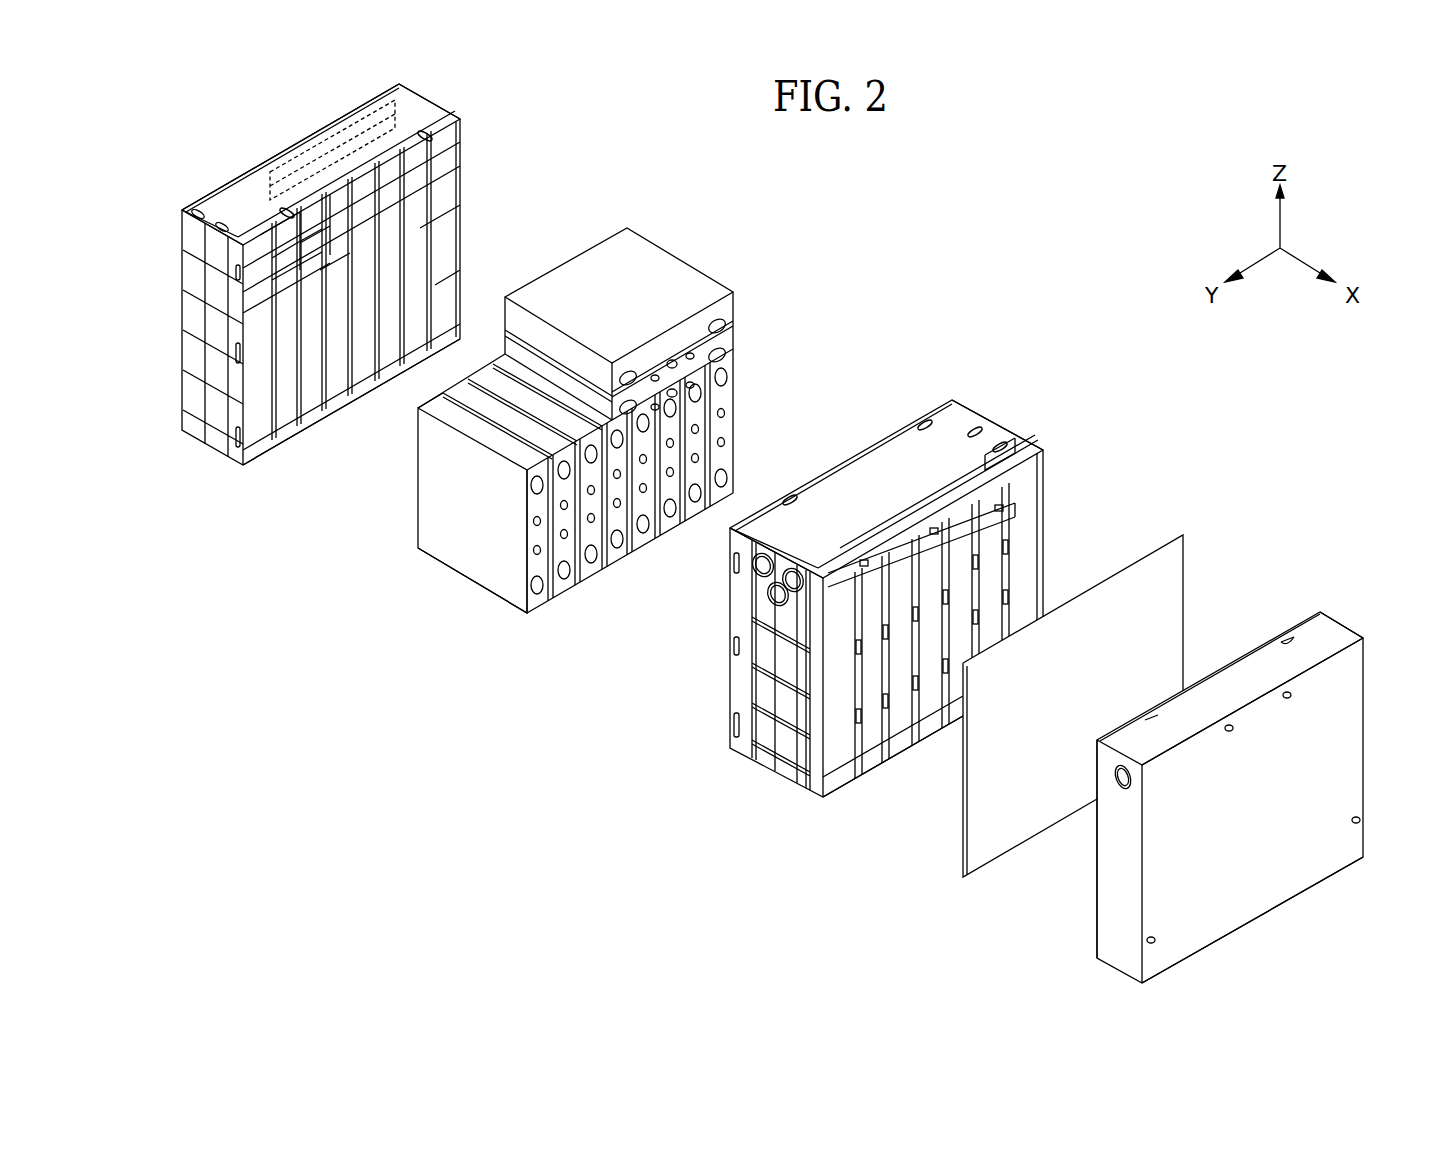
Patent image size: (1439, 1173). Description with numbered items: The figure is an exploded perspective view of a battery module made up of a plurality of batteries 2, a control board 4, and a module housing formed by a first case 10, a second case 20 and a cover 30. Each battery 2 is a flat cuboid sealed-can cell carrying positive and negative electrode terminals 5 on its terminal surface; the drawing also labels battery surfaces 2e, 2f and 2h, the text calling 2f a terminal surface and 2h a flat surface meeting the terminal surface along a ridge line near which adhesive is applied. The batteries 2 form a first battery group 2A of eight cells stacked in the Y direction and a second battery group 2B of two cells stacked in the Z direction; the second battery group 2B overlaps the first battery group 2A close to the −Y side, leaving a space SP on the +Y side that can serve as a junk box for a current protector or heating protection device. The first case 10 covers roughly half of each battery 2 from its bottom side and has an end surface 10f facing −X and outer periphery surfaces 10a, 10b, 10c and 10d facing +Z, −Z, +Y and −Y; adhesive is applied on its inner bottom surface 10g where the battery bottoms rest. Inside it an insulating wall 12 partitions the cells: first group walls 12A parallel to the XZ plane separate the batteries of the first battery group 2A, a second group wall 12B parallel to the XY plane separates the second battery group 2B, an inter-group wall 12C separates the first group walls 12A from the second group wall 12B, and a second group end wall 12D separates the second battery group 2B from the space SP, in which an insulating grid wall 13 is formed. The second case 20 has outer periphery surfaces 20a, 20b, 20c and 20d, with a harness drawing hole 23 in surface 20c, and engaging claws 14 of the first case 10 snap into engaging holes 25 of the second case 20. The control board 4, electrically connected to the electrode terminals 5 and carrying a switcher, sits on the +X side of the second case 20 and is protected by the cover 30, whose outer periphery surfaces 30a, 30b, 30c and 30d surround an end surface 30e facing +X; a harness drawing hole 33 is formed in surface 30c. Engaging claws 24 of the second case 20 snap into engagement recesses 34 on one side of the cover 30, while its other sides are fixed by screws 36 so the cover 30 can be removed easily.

The battery 2 is at (649, 312).
The first battery group 2A is at (542, 505).
The second battery group 2B is at (745, 306).
The module side surface 2e is at (420, 428).
The terminal surface 2f is at (530, 562).
The flat surface 2h is at (433, 532).
The control board 4 is at (1200, 525).
The electrode terminal 5 is at (537, 490).
The first case 10 is at (484, 327).
The outer periphery surface 10a is at (222, 205).
The outer periphery surface 10b is at (320, 422).
The outer periphery surface 10c is at (185, 330).
The outer periphery surface 10d is at (452, 112).
The end surface 10f is at (248, 170).
The inner bottom surface 10g is at (296, 160).
The insulating wall 12 is at (668, 190).
The first group wall 12A is at (435, 285).
The second group wall 12B is at (320, 270).
The inter-group wall 12C is at (420, 228).
The second group end wall 12D is at (300, 243).
The insulating grid wall 13 is at (215, 290).
The space SP is at (845, 580).
The engaging claw 14 is at (418, 135).
The second case 20 is at (922, 604).
The outer periphery surface 20a is at (925, 453).
The outer periphery surface 20b is at (857, 775).
The outer periphery surface 20c is at (783, 700).
The outer periphery surface 20d is at (1043, 513).
The harness drawing hole 23 is at (753, 567).
The engaging claw 24 is at (1000, 468).
The engaging hole 25 is at (733, 722).
The cover 30 is at (1239, 751).
The outer periphery surface 30a is at (1228, 680).
The outer periphery surface 30b is at (1322, 880).
The outer periphery surface 30c is at (1112, 892).
The outer periphery surface 30d is at (1366, 678).
The end surface 30e is at (1280, 853).
The harness drawing hole 33 is at (1124, 790).
The engagement recess 34 is at (1287, 637).
The screw 36 is at (1357, 817).